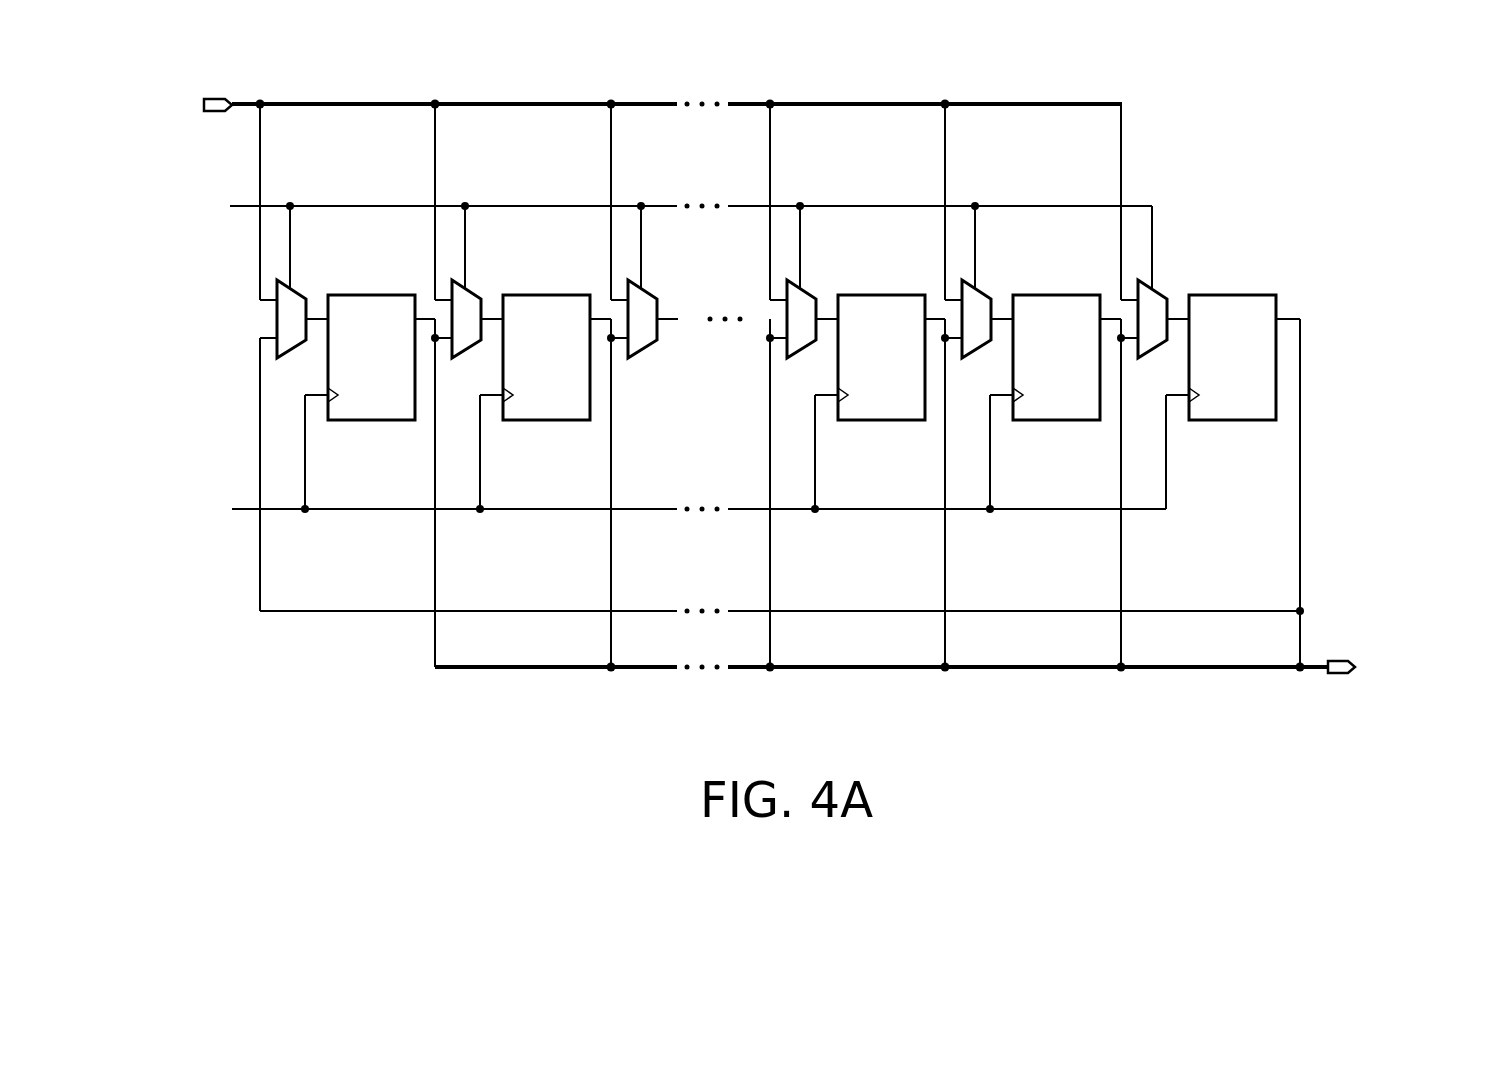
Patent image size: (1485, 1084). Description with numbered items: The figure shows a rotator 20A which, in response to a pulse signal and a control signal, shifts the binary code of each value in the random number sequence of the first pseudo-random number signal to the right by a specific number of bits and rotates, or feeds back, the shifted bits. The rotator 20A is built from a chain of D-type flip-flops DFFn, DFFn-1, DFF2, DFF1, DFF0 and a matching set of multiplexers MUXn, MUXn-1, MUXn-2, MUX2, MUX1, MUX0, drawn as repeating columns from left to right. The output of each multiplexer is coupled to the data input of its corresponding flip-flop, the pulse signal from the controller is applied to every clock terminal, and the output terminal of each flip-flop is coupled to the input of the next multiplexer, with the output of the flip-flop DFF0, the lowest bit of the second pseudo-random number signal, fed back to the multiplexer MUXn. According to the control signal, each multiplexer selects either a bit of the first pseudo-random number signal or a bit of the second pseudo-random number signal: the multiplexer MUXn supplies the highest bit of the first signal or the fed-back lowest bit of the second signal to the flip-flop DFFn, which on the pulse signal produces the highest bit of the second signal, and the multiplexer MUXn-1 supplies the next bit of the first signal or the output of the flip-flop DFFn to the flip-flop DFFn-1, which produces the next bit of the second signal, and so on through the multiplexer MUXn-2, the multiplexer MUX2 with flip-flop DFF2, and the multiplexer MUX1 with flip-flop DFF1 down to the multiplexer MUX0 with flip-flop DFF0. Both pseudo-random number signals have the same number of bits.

The rotator 20A is at (1268, 757).
The multiplexer MUXn is at (347, 257).
The multiplexer MUXn-1 is at (522, 257).
The multiplexer MUXn-2 is at (698, 257).
The multiplexer MUX2 is at (857, 257).
The multiplexer MUX1 is at (1032, 257).
The multiplexer MUX0 is at (1208, 257).
The D-type flip-flop DFFn is at (372, 420).
The D-type flip-flop DFFn-1 is at (547, 420).
The D-type flip-flop DFF2 is at (882, 420).
The D-type flip-flop DFF1 is at (1057, 420).
The D-type flip-flop DFF0 is at (1233, 420).